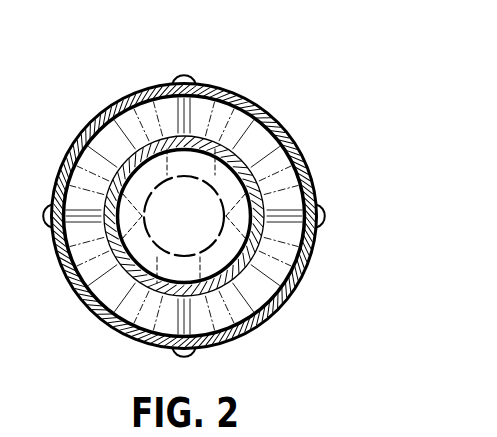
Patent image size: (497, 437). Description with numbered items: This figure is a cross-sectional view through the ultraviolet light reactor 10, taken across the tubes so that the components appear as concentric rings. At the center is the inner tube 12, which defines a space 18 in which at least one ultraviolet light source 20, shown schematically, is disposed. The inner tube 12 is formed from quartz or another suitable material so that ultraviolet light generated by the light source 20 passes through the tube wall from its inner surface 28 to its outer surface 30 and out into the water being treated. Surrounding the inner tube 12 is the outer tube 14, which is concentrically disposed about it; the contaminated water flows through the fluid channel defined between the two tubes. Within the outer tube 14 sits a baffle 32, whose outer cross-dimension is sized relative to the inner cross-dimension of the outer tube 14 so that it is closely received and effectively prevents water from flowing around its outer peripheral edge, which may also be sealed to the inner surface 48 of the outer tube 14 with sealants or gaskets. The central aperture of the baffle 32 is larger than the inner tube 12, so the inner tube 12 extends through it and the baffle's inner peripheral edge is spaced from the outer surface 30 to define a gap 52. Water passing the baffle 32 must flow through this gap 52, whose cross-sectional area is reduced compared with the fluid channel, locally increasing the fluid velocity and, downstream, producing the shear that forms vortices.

The ultraviolet light reactor 10 is at (316, 45).
The inner tube 12 is at (119, 167).
The outer tube 14 is at (273, 115).
The space 18 is at (195, 156).
The ultraviolet light source 20 is at (222, 190).
The inner surface 28 is at (227, 248).
The outer surface 30 is at (226, 137).
The baffle 32 is at (146, 310).
The inner surface 48 is at (258, 304).
The gap 52 is at (105, 245).